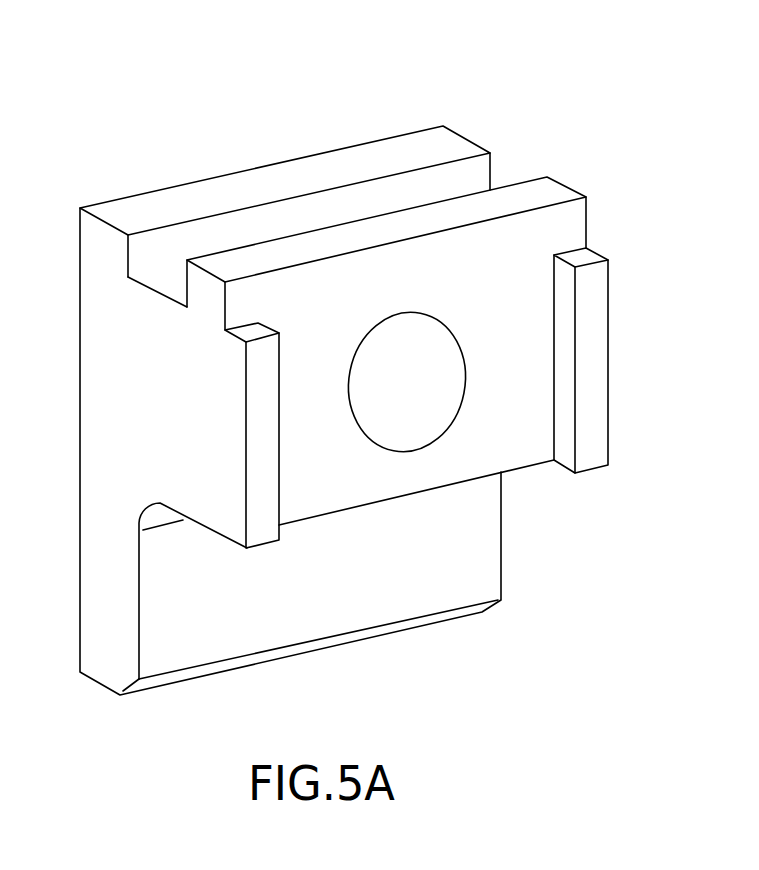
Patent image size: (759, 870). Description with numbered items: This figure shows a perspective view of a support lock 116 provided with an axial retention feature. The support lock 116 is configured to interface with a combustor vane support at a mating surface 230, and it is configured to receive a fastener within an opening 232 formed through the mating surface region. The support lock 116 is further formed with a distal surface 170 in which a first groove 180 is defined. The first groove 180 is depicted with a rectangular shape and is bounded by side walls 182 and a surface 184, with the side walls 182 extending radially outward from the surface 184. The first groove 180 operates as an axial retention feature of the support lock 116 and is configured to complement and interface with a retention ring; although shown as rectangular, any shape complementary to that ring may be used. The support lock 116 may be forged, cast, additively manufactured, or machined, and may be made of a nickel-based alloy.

The support lock 116 is at (124, 89).
The distal surface 170 is at (135, 212).
The first groove 180 is at (518, 166).
The side walls 182 is at (118, 267).
The surface 184 is at (160, 297).
The mating surface 230 is at (513, 287).
The opening 232 is at (440, 407).